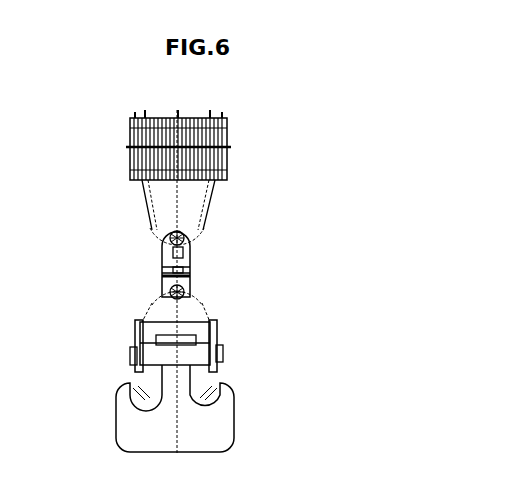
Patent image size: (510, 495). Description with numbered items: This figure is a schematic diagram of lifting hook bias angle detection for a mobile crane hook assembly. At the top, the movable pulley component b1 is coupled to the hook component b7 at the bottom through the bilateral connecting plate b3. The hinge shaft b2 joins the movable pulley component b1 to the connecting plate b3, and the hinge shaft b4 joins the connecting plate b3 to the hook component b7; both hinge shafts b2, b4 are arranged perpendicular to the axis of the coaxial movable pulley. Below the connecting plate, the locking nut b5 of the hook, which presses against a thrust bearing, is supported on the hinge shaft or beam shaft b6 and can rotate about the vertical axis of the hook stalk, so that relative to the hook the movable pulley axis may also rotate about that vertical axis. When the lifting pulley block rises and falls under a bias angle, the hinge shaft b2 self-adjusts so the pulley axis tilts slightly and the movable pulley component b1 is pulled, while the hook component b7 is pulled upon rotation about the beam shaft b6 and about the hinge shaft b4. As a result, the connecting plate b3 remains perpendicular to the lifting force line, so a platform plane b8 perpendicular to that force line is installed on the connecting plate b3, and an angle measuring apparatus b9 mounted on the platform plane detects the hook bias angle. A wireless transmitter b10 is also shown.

The movable pulley component b1 is at (205, 202).
The hinge shaft b2 is at (203, 230).
The connecting plate b3 is at (200, 262).
The hinge shaft b4 is at (190, 292).
The locking nut b5 is at (200, 333).
The hinge shaft (beam shaft) b6 is at (203, 352).
The hook component b7 is at (225, 428).
The platform plane b8 is at (160, 277).
The angle measuring apparatus b9 is at (160, 267).
The wireless transmitter b10 is at (160, 250).